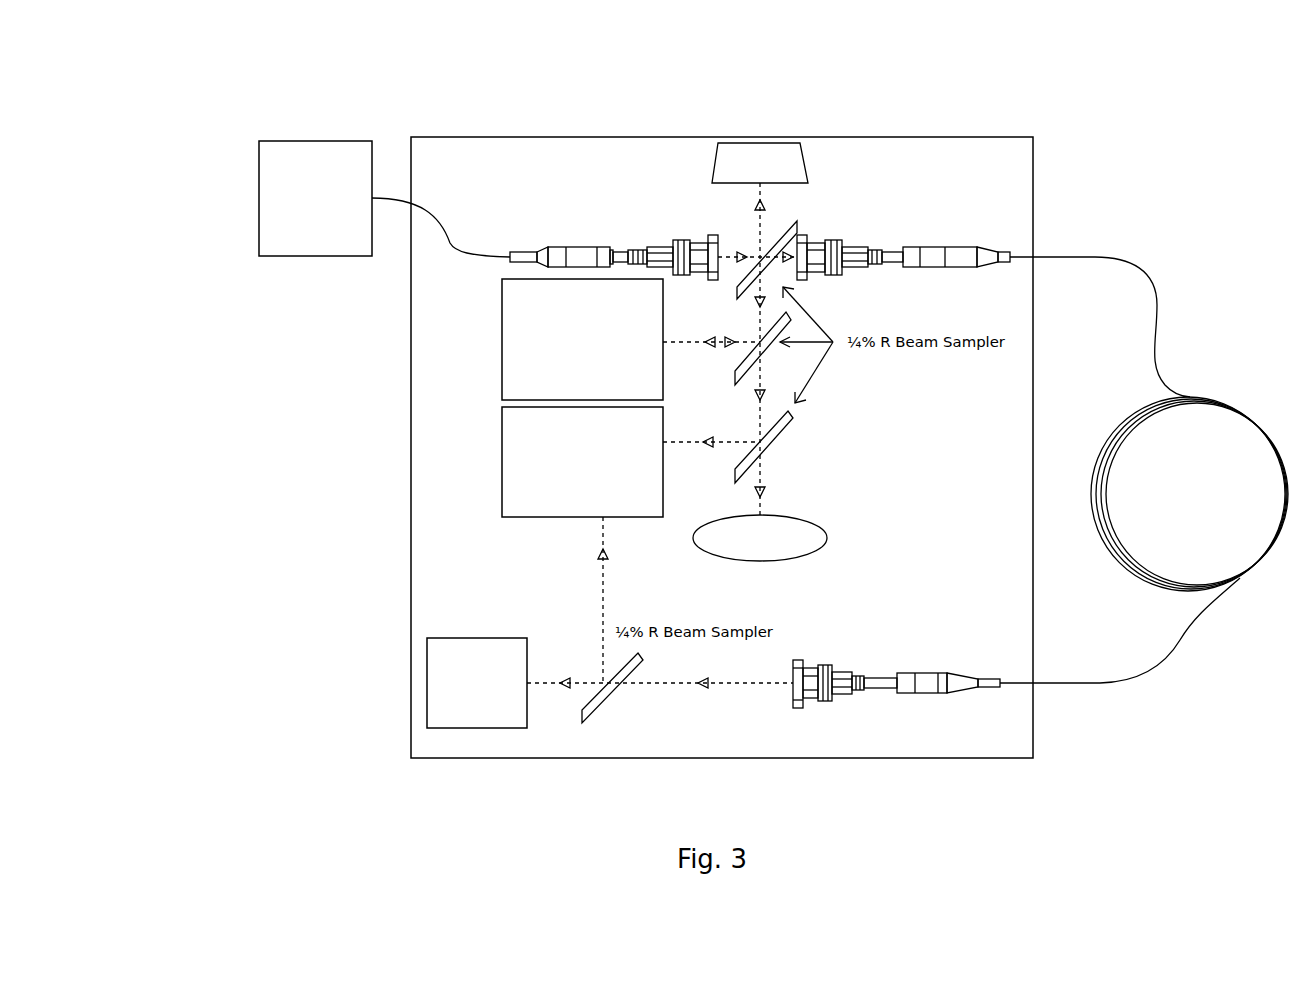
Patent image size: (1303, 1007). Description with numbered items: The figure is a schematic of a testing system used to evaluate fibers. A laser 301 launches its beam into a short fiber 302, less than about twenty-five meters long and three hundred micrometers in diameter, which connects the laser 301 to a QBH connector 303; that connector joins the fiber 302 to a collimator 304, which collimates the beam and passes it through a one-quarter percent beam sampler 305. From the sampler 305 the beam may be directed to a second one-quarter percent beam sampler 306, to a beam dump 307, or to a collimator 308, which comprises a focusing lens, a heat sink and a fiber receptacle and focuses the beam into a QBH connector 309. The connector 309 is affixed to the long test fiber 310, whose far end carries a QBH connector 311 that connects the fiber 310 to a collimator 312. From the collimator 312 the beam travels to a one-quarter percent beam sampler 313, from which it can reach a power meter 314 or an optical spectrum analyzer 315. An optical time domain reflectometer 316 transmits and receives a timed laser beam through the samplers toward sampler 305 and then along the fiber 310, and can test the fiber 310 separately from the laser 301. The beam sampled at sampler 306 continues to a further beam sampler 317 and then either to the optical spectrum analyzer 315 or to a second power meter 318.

The laser 301 is at (350, 152).
The fiber 302 is at (450, 243).
The QBH connector 303 is at (548, 243).
The collimator 304 is at (660, 243).
The ¼% beam sampler 305 is at (783, 228).
The ¼% beam sampler 306 is at (788, 318).
The beam dump 307 is at (780, 143).
The collimator 308 is at (860, 243).
The QBH connector 309 is at (975, 250).
The long test fiber 310 is at (1080, 257).
The QBH connector 311 is at (953, 695).
The collimator 312 is at (818, 702).
The ¼% beam sampler 313 is at (603, 713).
The power meter 314 is at (482, 728).
The optical spectrum analyzer 315 is at (502, 470).
The optical time domain reflectometer 316 is at (502, 370).
The ¼% beam sampler 317 is at (785, 428).
The power meter 318 is at (823, 528).